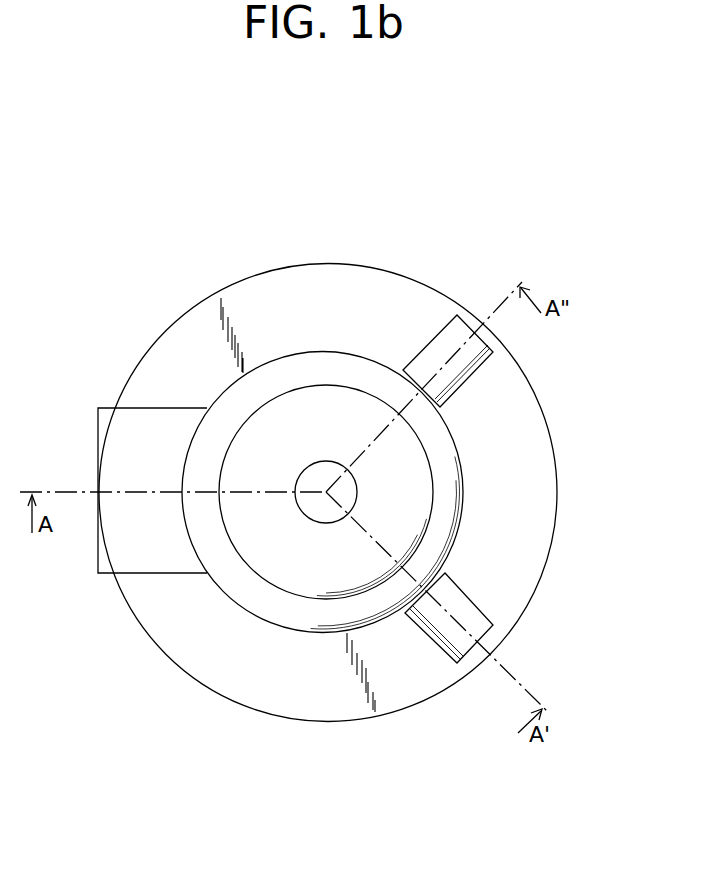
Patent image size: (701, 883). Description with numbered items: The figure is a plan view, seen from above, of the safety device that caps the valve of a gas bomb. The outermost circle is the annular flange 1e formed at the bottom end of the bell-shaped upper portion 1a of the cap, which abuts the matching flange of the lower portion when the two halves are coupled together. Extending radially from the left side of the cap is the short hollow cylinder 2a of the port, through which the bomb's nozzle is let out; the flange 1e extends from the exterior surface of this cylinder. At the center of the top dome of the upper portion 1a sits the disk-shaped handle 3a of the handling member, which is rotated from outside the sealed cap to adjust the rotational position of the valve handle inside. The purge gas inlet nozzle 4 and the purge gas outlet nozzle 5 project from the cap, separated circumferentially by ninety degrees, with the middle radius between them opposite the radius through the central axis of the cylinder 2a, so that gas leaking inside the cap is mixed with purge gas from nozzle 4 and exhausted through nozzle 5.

The annular flange 1e is at (302, 283).
The short hollow cylinder 2a is at (112, 443).
The bell-shaped upper portion 1a is at (445, 441).
The disk-shaped handle 3a is at (415, 496).
The purge gas outlet nozzle 5 is at (463, 363).
The purge gas inlet nozzle 4 is at (465, 612).